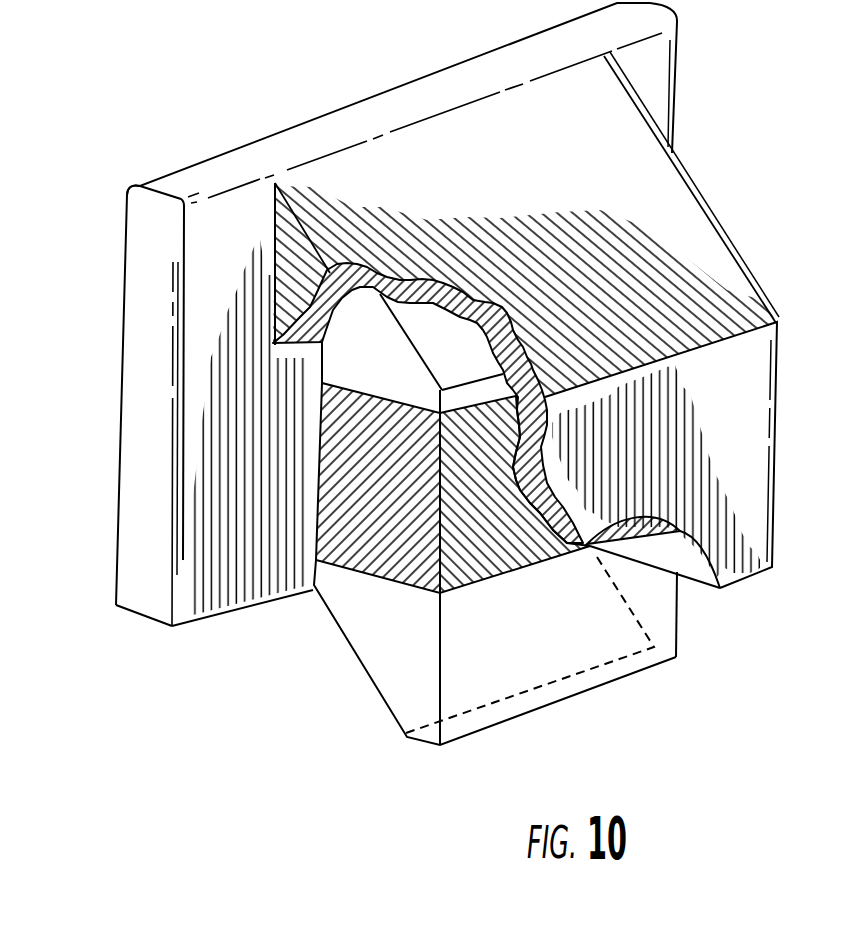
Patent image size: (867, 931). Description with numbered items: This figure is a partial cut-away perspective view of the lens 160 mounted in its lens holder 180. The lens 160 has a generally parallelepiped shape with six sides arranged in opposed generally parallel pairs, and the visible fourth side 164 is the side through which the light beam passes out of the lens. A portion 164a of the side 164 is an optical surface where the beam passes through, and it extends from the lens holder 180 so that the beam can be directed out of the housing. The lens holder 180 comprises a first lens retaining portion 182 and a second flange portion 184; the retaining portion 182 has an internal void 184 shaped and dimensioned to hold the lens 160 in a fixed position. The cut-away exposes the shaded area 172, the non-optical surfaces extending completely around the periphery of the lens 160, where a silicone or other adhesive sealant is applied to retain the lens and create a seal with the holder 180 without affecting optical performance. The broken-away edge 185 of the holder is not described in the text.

The lens 160 is at (680, 620).
The fourth side 164 is at (453, 660).
The portion of fourth side 164a is at (573, 633).
The non-optical surfaces 172 is at (498, 513).
The lens holder 180 is at (763, 217).
The lens retaining portion 182 is at (747, 412).
The flange portion 184 is at (675, 72).
The broken-away opening edge 185 is at (455, 318).